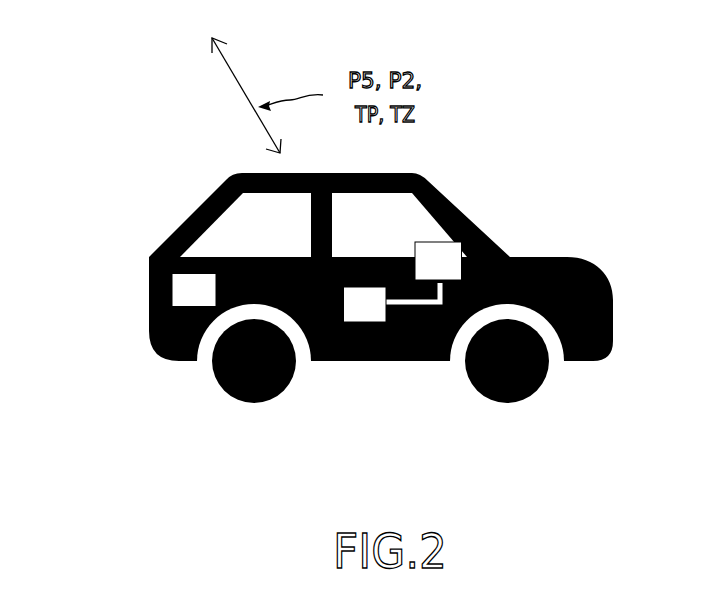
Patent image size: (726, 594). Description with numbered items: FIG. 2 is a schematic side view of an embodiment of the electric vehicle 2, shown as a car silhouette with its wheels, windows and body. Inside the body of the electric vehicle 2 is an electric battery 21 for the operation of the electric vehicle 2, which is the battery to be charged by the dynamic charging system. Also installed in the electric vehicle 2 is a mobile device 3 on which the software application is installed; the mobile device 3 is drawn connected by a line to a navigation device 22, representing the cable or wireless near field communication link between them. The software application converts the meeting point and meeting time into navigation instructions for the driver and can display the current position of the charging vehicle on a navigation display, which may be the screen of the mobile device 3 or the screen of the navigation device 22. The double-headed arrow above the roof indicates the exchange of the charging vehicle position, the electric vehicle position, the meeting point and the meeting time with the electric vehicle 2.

The electric vehicle 2 is at (164, 232).
The electric battery 21 is at (205, 303).
The navigation device 22 is at (452, 275).
The mobile device 3 is at (371, 318).